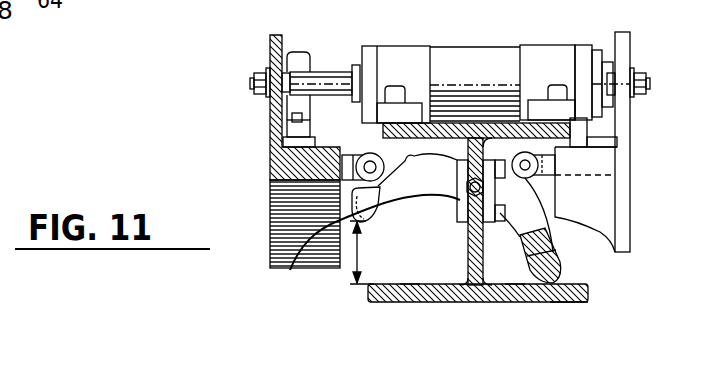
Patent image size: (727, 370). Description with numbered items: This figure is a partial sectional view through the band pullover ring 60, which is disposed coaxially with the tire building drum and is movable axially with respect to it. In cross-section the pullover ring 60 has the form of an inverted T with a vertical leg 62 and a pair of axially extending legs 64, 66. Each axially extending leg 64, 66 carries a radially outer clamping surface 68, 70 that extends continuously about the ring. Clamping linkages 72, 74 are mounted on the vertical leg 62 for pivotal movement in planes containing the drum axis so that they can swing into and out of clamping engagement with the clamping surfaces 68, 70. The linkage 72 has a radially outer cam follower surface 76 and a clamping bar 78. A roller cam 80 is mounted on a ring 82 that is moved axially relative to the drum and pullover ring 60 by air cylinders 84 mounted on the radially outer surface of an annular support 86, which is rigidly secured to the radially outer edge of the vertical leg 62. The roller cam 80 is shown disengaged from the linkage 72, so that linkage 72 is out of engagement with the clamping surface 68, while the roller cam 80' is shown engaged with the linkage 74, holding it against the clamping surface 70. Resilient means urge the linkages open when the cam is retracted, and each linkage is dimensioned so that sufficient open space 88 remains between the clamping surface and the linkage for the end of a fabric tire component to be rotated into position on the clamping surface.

The band pullover ring 60 is at (243, 52).
The vertical leg 62 is at (478, 244).
The axially extending leg 64 is at (448, 292).
The axially extending leg 66 is at (560, 292).
The clamping surface 68 is at (418, 280).
The clamping surface 70 is at (522, 276).
The clamping linkage 72 is at (428, 180).
The clamping linkage 74 is at (560, 262).
The cam follower surface 76 is at (405, 160).
The clamping bar 78 is at (305, 238).
The roller cam 80 is at (294, 158).
The roller cam 80' is at (601, 179).
The ring 82 is at (270, 122).
The air cylinder 84 is at (335, 80).
The annular support 86 is at (452, 130).
The open space 88 is at (354, 252).